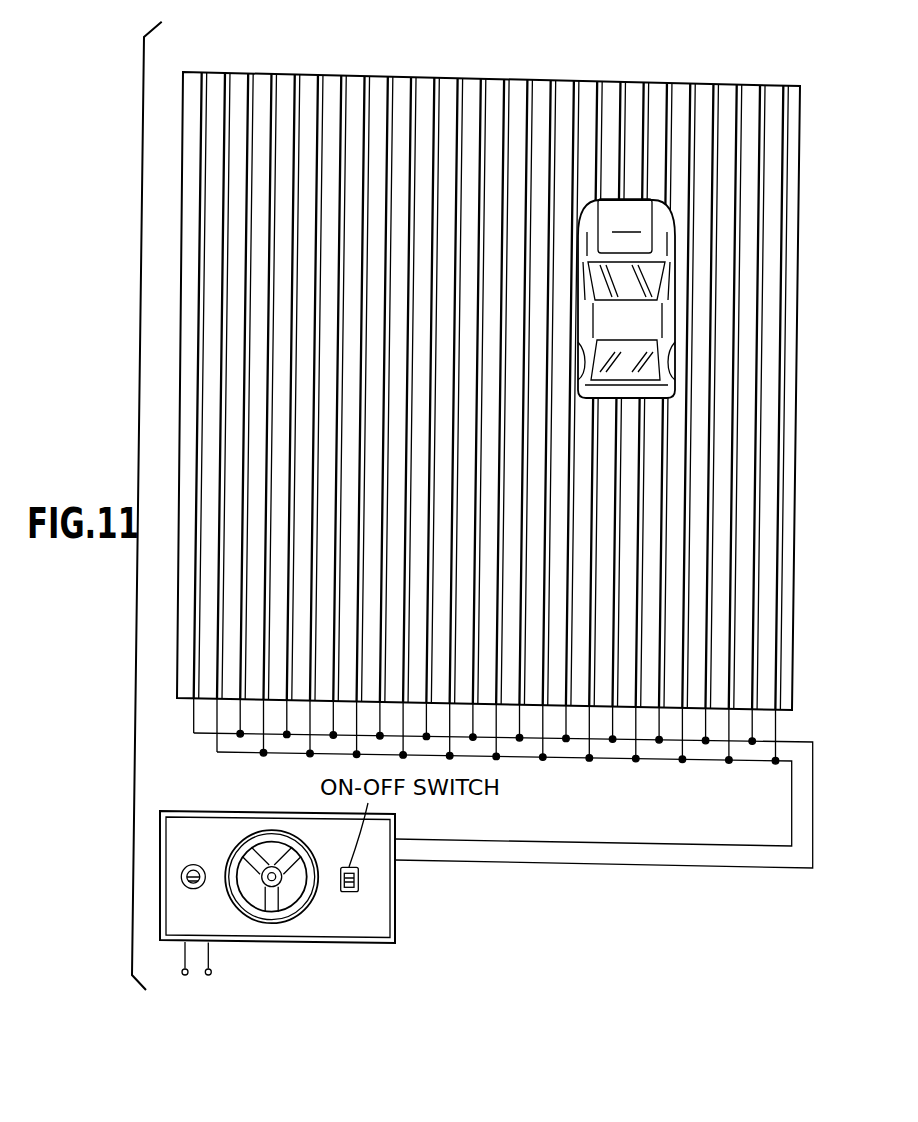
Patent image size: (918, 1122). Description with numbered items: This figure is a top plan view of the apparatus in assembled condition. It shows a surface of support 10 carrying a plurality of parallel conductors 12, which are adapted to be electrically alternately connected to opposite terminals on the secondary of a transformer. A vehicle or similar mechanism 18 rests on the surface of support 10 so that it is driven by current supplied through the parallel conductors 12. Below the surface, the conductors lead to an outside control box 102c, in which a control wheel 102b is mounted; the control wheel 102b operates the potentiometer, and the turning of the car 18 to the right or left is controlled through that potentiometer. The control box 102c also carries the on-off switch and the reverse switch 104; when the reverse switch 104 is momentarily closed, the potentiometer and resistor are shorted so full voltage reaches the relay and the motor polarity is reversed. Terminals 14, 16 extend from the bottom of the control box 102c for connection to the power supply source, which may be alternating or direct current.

The surface of support 10 is at (630, 79).
The parallel conductors 12 is at (298, 76).
The vehicle mechanism 18 is at (626, 298).
The control wheel 102b is at (288, 914).
The outside control box 102c is at (383, 936).
The reverse switch 104 is at (191, 868).
The power terminal 14 is at (183, 975).
The power terminal 16 is at (209, 975).